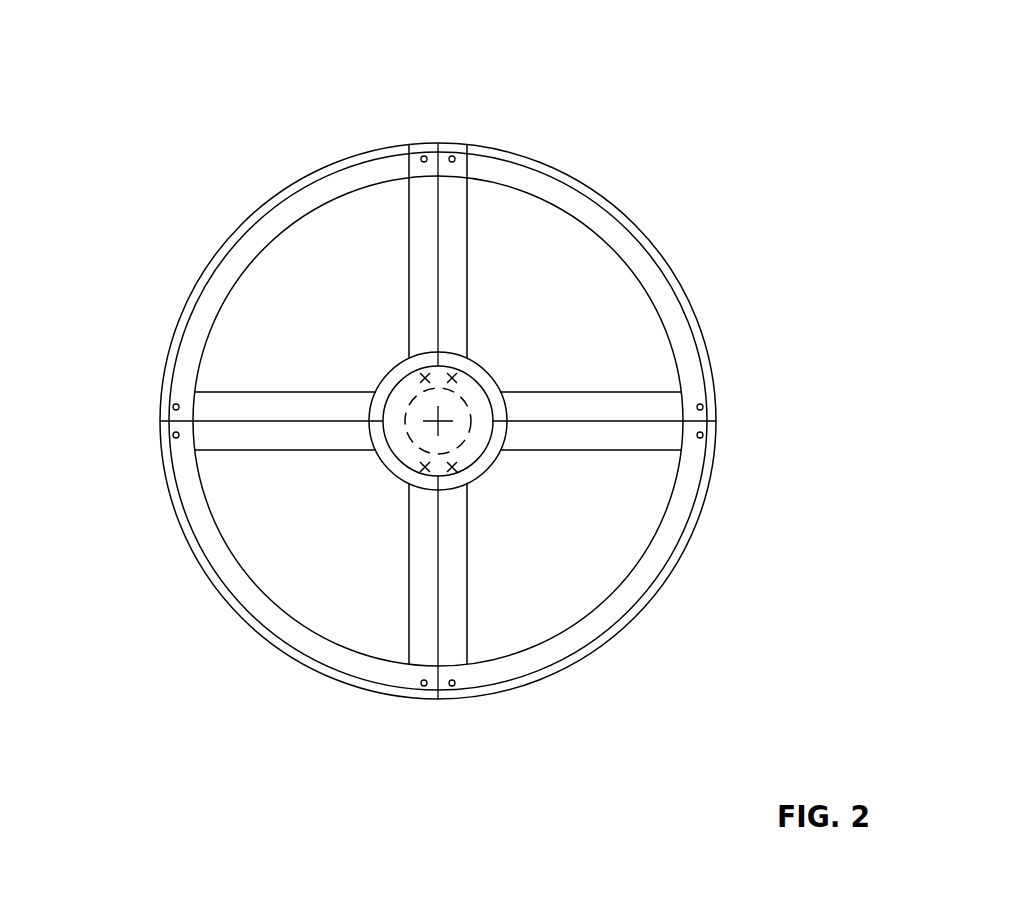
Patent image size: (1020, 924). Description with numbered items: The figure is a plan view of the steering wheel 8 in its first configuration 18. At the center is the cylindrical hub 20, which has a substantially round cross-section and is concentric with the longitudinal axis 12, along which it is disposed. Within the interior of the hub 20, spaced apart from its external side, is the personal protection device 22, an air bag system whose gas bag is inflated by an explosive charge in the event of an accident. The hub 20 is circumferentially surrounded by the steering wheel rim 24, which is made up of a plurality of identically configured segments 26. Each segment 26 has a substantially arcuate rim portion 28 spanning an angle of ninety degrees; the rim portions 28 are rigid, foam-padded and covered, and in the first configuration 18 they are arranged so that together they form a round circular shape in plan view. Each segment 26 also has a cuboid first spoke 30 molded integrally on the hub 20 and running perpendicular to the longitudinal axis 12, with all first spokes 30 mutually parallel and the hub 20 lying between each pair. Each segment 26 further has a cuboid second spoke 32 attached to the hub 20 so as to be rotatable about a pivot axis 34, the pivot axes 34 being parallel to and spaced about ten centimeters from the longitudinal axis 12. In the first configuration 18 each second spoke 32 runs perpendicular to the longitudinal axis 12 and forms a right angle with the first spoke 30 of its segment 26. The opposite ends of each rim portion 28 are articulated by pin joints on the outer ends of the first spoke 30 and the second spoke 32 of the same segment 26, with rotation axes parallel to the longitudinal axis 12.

The steering wheel 8 is at (810, 177).
The longitudinal axis 12 is at (440, 428).
The first configuration 18 is at (150, 120).
The hub 20 is at (390, 460).
The personal protection device 22 is at (453, 398).
The steering wheel rim 24 is at (283, 195).
The segment 26 is at (250, 228).
The rim portion 28 is at (178, 312).
The first spoke 30 is at (257, 402).
The second spoke 32 is at (420, 210).
The pivot axis 34 is at (425, 375).